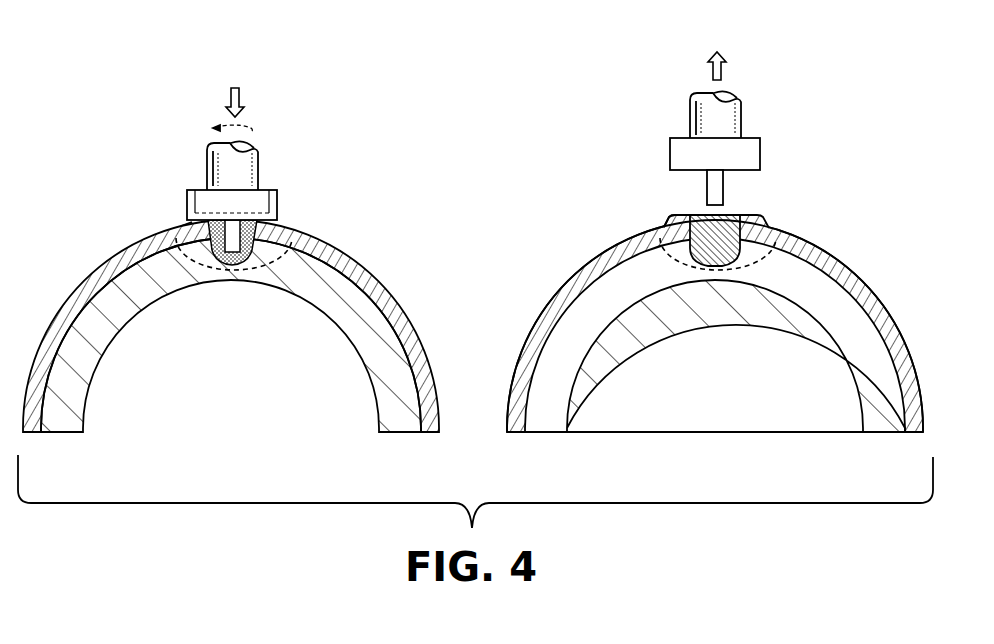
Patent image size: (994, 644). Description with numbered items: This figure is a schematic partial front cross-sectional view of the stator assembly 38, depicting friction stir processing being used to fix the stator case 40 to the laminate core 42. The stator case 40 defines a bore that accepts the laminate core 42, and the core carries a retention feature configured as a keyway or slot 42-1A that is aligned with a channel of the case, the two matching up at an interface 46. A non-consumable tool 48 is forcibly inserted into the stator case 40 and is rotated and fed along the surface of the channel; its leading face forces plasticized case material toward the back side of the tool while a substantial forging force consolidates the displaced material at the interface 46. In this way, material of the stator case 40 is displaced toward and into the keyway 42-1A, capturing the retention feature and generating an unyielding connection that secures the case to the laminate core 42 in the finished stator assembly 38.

The stator assembly 38 is at (541, 252).
The stator case 40 is at (125, 263).
The laminate core 42 is at (105, 335).
The keyway or slot 42-1A is at (247, 268).
The interface 46 is at (183, 222).
The tool 48 is at (262, 168).